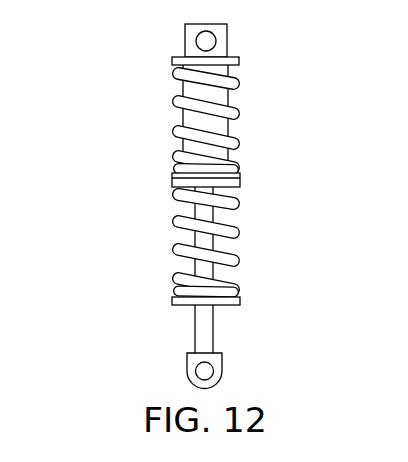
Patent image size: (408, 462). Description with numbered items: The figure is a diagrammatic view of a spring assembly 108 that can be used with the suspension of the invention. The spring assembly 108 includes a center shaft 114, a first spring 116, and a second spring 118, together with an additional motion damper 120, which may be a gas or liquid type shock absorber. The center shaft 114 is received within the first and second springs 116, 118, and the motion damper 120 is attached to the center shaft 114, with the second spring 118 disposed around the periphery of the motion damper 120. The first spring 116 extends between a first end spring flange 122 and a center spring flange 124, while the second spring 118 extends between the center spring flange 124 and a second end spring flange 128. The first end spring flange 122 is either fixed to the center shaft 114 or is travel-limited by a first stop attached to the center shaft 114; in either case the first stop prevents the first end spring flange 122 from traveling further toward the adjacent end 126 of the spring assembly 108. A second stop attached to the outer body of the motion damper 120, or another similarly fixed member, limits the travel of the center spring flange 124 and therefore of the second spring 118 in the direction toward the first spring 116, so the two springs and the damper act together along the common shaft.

The spring assembly 108 is at (206, 206).
The second end spring flange 128 is at (172, 62).
The motion damper 120 is at (186, 121).
The second spring 118 is at (232, 141).
The center spring flange 124 is at (242, 179).
The center shaft 114 is at (205, 243).
The first spring 116 is at (232, 263).
The first end spring flange 122 is at (232, 300).
The adjacent end of the spring assembly 126 is at (222, 367).